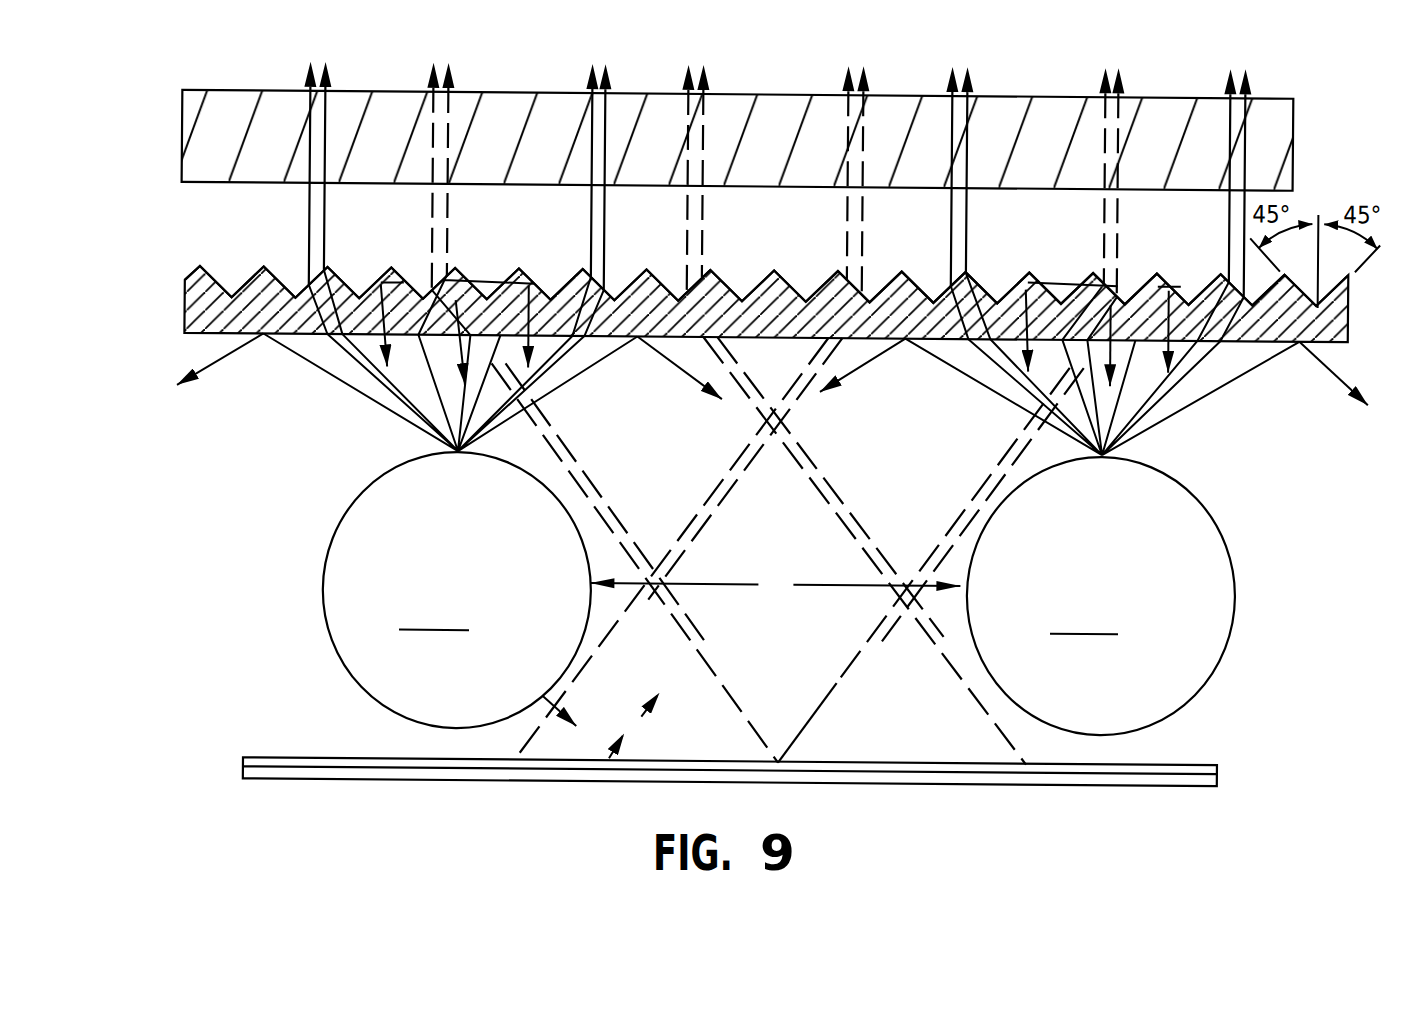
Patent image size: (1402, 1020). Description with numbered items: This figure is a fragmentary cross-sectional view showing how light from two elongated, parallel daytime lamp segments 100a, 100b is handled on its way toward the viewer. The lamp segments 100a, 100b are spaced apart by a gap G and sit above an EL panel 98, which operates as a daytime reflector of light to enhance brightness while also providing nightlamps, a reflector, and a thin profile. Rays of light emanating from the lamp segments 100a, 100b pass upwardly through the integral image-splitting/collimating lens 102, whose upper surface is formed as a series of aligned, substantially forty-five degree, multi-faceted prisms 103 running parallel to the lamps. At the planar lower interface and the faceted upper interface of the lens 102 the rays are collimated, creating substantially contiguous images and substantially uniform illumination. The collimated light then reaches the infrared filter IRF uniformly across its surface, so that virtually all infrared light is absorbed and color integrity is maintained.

The infrared filter IRF is at (190, 121).
The image-splitting/collimating lens 102 is at (183, 306).
The prisms 103 is at (198, 271).
The lamp segment 100a is at (457, 590).
The lamp segment 100b is at (1101, 596).
The gap between lamp segments G is at (775, 586).
The EL panel 98 is at (1207, 774).